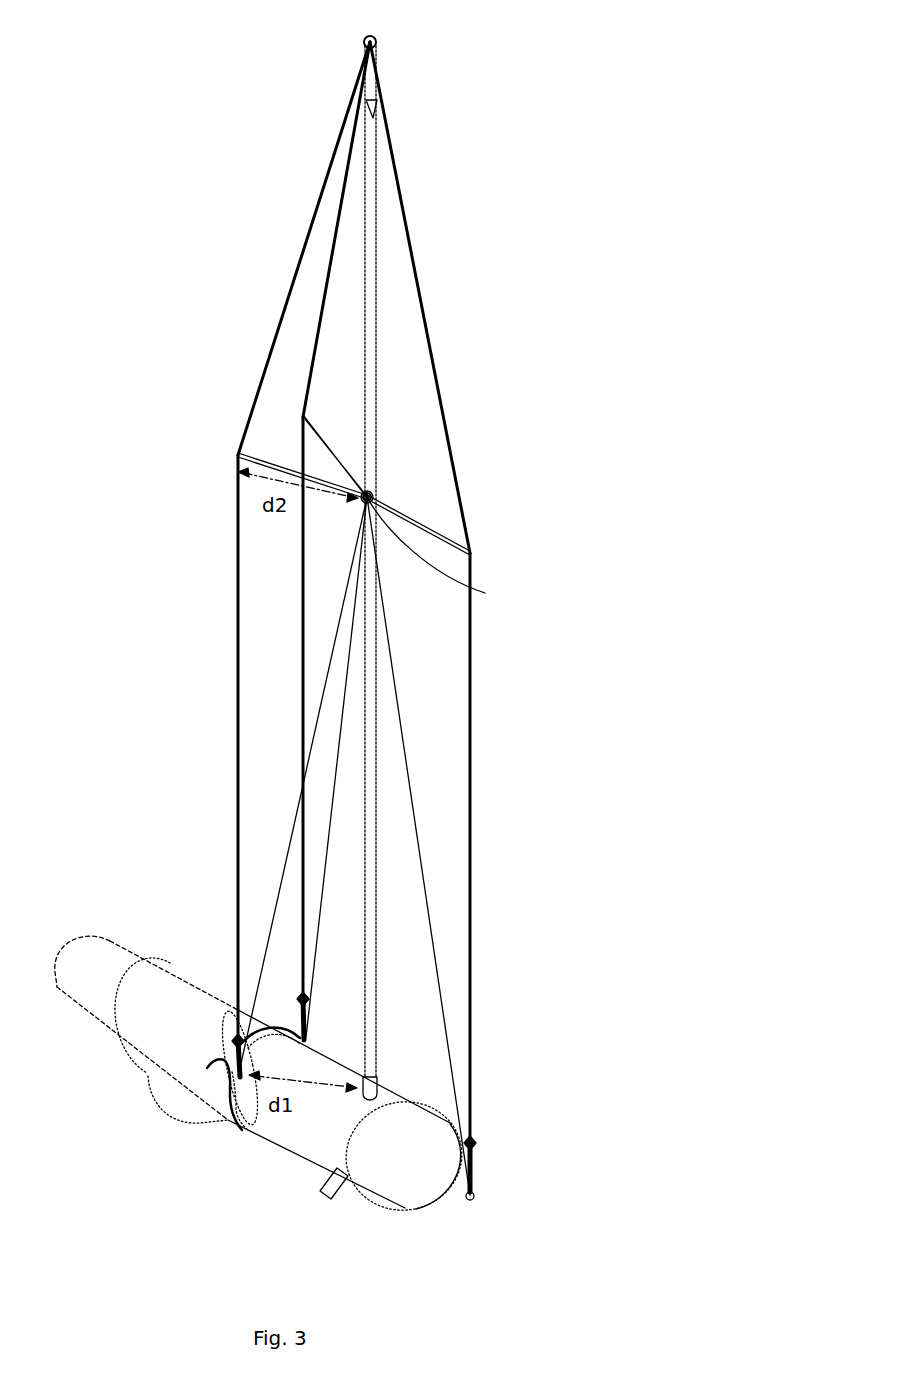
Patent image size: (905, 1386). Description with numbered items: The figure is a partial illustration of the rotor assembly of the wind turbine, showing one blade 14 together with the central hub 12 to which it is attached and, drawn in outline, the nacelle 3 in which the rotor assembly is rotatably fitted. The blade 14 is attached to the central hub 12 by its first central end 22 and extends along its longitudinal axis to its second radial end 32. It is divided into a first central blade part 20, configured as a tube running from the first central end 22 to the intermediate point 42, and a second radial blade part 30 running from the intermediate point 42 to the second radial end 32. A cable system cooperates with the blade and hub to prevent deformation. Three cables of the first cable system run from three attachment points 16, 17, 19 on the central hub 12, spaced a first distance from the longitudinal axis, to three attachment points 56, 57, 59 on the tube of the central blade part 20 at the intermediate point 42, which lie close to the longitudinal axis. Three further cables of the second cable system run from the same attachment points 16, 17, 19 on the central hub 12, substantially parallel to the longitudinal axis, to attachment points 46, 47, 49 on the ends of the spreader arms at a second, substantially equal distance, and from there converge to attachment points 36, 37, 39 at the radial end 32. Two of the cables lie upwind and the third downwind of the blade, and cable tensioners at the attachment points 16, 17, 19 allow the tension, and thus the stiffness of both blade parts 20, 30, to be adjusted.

The nacelle 3 is at (183, 990).
The central hub 12 is at (394, 1190).
The blade 14 is at (116, 481).
The attachment point 16 is at (230, 1061).
The attachment point 17 is at (310, 1040).
The attachment point 19 is at (474, 1196).
The first central blade part 20 is at (202, 592).
The first central end 22 is at (380, 1077).
The second radial blade part 30 is at (231, 288).
The second radial end 32 is at (377, 35).
The attachment point 36 is at (386, 244).
The attachment point 37 is at (336, 229).
The attachment point 39 is at (420, 297).
The intermediate point 42 is at (444, 553).
The attachment point 46 is at (238, 454).
The attachment point 47 is at (303, 415).
The attachment point 49 is at (484, 556).
The attachment point 56 is at (380, 495).
The attachment point 57 is at (367, 497).
The attachment point 59 is at (367, 497).